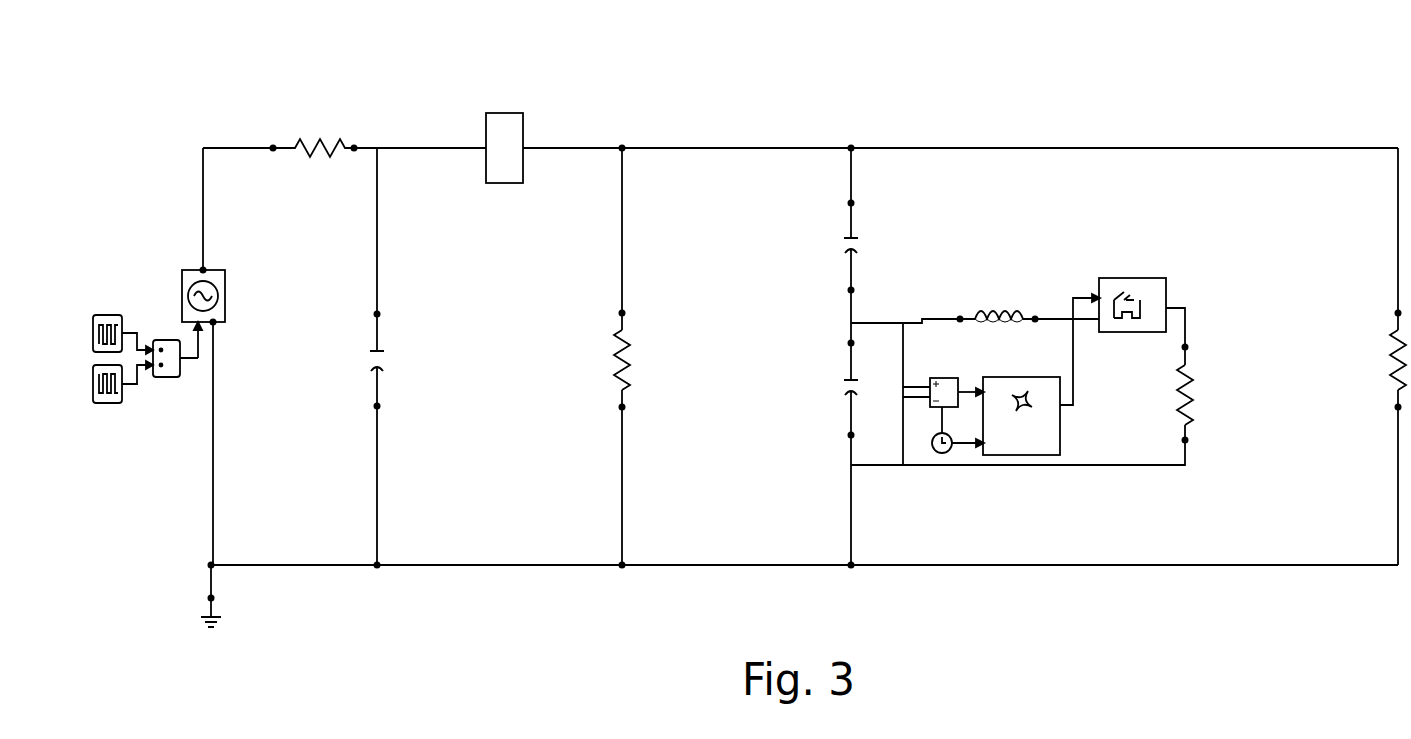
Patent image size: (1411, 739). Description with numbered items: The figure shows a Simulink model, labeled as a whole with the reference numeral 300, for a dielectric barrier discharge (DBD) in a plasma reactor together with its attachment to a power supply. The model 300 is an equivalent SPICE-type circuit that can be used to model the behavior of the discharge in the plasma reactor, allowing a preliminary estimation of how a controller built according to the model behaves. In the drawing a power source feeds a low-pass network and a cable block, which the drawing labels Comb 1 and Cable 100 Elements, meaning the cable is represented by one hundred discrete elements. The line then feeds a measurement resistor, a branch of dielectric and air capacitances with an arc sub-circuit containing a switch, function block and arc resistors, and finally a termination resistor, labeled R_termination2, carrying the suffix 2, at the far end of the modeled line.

The simulation circuit model 300 is at (749, 329).
The comb block 1 is at (505, 130).
The cable elements block 100 is at (502, 180).
The termination resistor 2 is at (1304, 356).